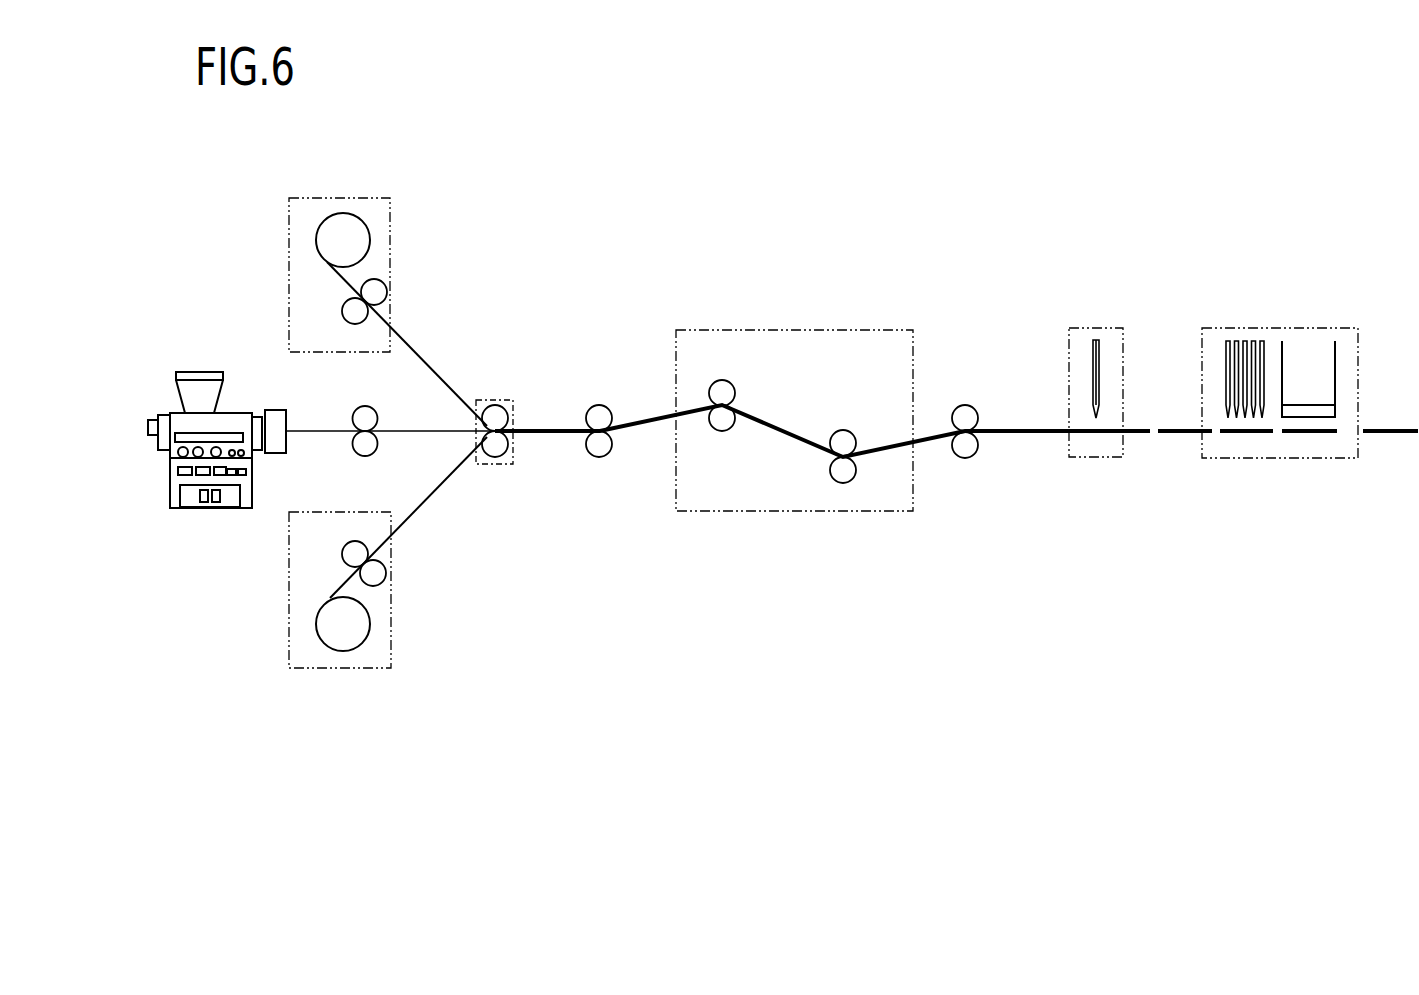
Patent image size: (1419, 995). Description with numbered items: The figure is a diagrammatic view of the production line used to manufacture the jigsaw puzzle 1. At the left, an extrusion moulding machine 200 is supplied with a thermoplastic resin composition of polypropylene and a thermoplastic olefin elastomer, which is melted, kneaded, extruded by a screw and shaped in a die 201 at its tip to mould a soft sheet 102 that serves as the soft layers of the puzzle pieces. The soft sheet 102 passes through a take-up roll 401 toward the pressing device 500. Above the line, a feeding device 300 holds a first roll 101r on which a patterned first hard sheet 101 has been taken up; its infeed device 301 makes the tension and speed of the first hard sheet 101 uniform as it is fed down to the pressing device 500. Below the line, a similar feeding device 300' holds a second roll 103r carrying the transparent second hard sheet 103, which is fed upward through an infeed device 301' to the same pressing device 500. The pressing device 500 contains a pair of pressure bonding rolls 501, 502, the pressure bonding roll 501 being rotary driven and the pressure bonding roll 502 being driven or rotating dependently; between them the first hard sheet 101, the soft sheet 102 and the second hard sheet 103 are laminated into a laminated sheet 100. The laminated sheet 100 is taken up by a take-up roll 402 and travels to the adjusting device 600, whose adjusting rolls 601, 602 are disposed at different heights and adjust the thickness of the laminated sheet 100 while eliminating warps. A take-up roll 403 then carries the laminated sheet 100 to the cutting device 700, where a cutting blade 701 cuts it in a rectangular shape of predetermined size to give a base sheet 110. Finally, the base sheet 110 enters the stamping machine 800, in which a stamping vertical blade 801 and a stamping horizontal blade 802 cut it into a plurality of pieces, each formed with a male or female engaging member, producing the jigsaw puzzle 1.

The jigsaw puzzle 1 is at (1395, 435).
The laminated sheet 100 is at (540, 435).
The first hard sheet 101 is at (447, 383).
The first roll 101r is at (343, 222).
The soft sheet 102 is at (330, 428).
The second hard sheet 103 is at (440, 485).
The second roll 103r is at (350, 633).
The base sheet 110 is at (1180, 437).
The extrusion moulding machine 200 is at (210, 373).
The die 201 is at (275, 412).
The feeding device 300 is at (370, 261).
The feeding device 300' is at (312, 617).
The infeed device 301 is at (397, 285).
The infeed device 301' is at (401, 578).
The take-up roll 401 is at (360, 448).
The take-up roll 402 is at (605, 443).
The take-up roll 403 is at (968, 448).
The pressing device 500 is at (515, 397).
The pressure bonding roll 501 is at (498, 418).
The pressure bonding roll 502 is at (494, 447).
The adjusting device 600 is at (835, 330).
The adjusting roll 601 is at (725, 427).
The adjusting roll 602 is at (843, 442).
The cutting device 700 is at (1082, 458).
The cutting blade 701 is at (1095, 350).
The stamping machine 800 is at (1278, 458).
The stamping vertical blade 801 is at (1230, 352).
The stamping horizontal blade 802 is at (1307, 353).